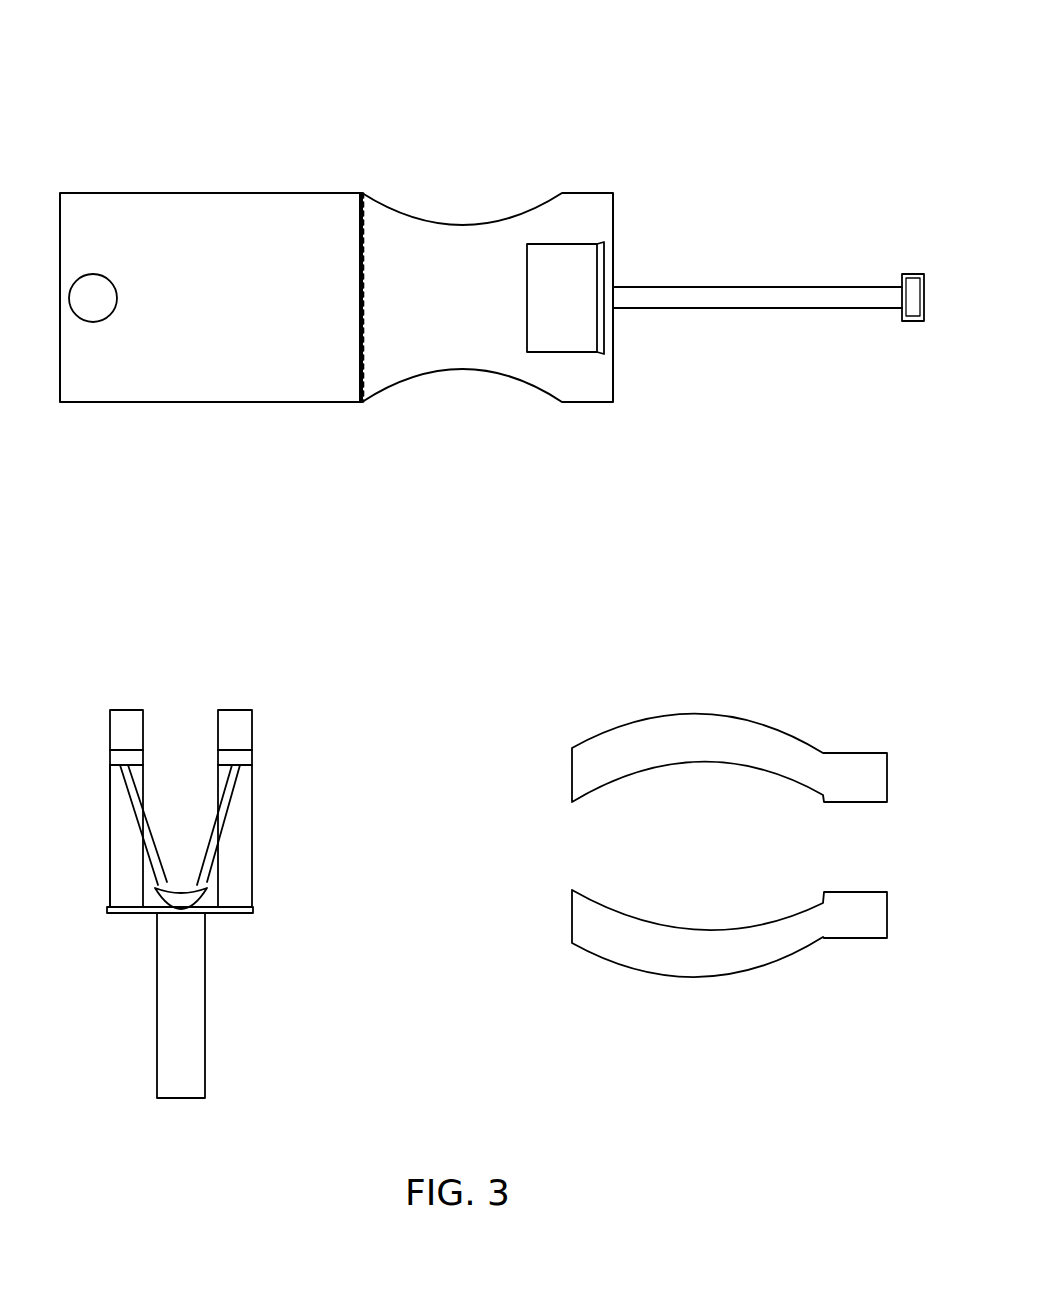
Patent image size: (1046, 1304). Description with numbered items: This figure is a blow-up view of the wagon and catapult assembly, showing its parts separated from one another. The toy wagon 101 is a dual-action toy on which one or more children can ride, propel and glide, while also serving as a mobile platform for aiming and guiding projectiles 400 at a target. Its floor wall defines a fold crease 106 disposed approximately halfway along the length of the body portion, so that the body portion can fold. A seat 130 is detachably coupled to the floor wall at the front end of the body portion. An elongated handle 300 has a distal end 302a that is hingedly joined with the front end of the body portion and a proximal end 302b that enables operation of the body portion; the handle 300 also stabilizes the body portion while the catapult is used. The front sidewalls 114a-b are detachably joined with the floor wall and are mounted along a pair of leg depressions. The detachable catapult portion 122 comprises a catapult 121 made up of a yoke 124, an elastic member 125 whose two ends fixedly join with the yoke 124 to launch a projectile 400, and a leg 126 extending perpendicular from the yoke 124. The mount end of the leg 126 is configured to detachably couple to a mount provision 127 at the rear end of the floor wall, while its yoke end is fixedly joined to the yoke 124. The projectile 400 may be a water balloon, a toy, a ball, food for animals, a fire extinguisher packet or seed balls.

The toy wagon 101 is at (165, 70).
The mount provision 127 is at (87, 283).
The fold crease 106 is at (360, 193).
The seat 130 is at (568, 268).
The elongated handle 300 is at (753, 298).
The distal end 302a is at (629, 300).
The proximal end 302b is at (913, 290).
The catapult portion 122 is at (120, 668).
The catapult 121 is at (98, 808).
The elastic member 125 is at (152, 837).
The projectile 400 is at (197, 895).
The yoke 124 is at (128, 897).
The leg 126 is at (192, 1032).
The front sidewalls 114a-b is at (568, 717).